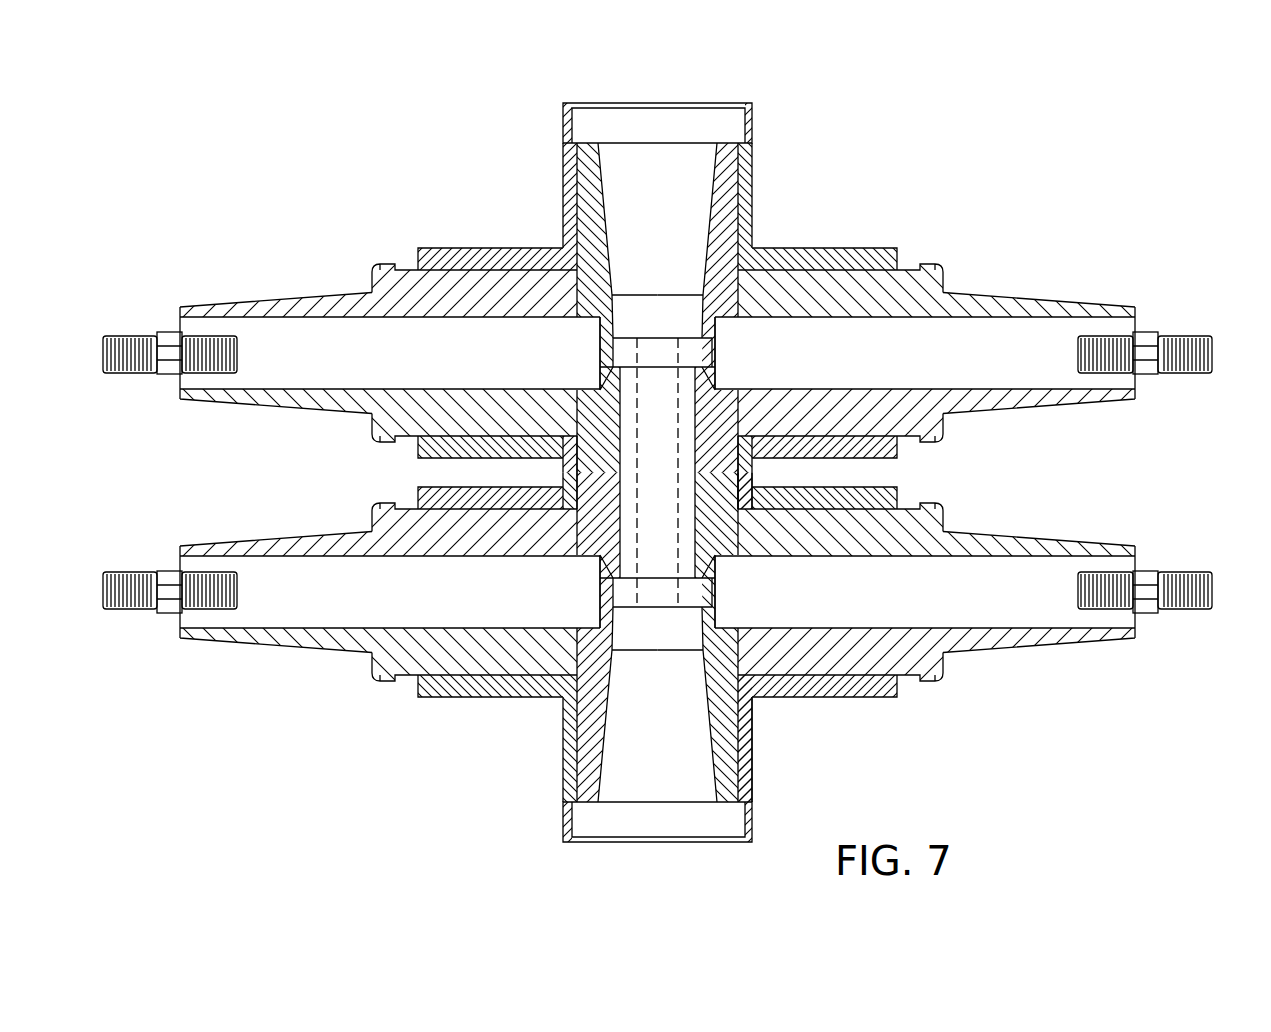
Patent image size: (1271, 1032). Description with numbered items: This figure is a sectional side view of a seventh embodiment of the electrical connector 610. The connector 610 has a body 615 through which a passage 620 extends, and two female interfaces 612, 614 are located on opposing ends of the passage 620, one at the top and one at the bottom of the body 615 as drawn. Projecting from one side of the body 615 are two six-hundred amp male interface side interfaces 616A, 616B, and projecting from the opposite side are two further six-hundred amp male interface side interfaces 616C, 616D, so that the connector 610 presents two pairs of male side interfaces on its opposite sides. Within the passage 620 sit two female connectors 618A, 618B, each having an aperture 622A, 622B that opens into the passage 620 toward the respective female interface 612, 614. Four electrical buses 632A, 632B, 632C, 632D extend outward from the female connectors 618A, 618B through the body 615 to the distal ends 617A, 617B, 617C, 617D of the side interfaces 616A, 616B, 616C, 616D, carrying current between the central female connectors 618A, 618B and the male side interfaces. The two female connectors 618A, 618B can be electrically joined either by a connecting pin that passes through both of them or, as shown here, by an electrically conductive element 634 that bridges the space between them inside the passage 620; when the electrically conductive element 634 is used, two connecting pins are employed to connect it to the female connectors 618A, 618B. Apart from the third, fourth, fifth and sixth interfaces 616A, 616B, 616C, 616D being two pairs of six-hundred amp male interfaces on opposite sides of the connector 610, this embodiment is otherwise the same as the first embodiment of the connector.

The electrical connector 610 is at (378, 173).
The female interface 612 is at (722, 103).
The female interface 614 is at (616, 843).
The body 615 is at (752, 712).
The 600 amp male interface side interface 616A is at (222, 303).
The 600 amp male interface side interface 616B is at (1115, 296).
The 600 amp male interface side interface 616C is at (195, 640).
The 600 amp male interface side interface 616D is at (1070, 540).
The distal end 617A is at (178, 382).
The distal end 617B is at (1152, 383).
The distal end 617C is at (182, 567).
The distal end 617D is at (1150, 620).
The female connector 618A is at (628, 348).
The female connector 618B is at (623, 591).
The passage 620 is at (752, 779).
The aperture 622A is at (665, 338).
The aperture 622B is at (662, 608).
The electrical bus 632A is at (295, 373).
The electrical bus 632B is at (966, 330).
The electrical bus 632C is at (320, 620).
The electrical bus 632D is at (990, 620).
The electrically conductive element 634 is at (655, 477).